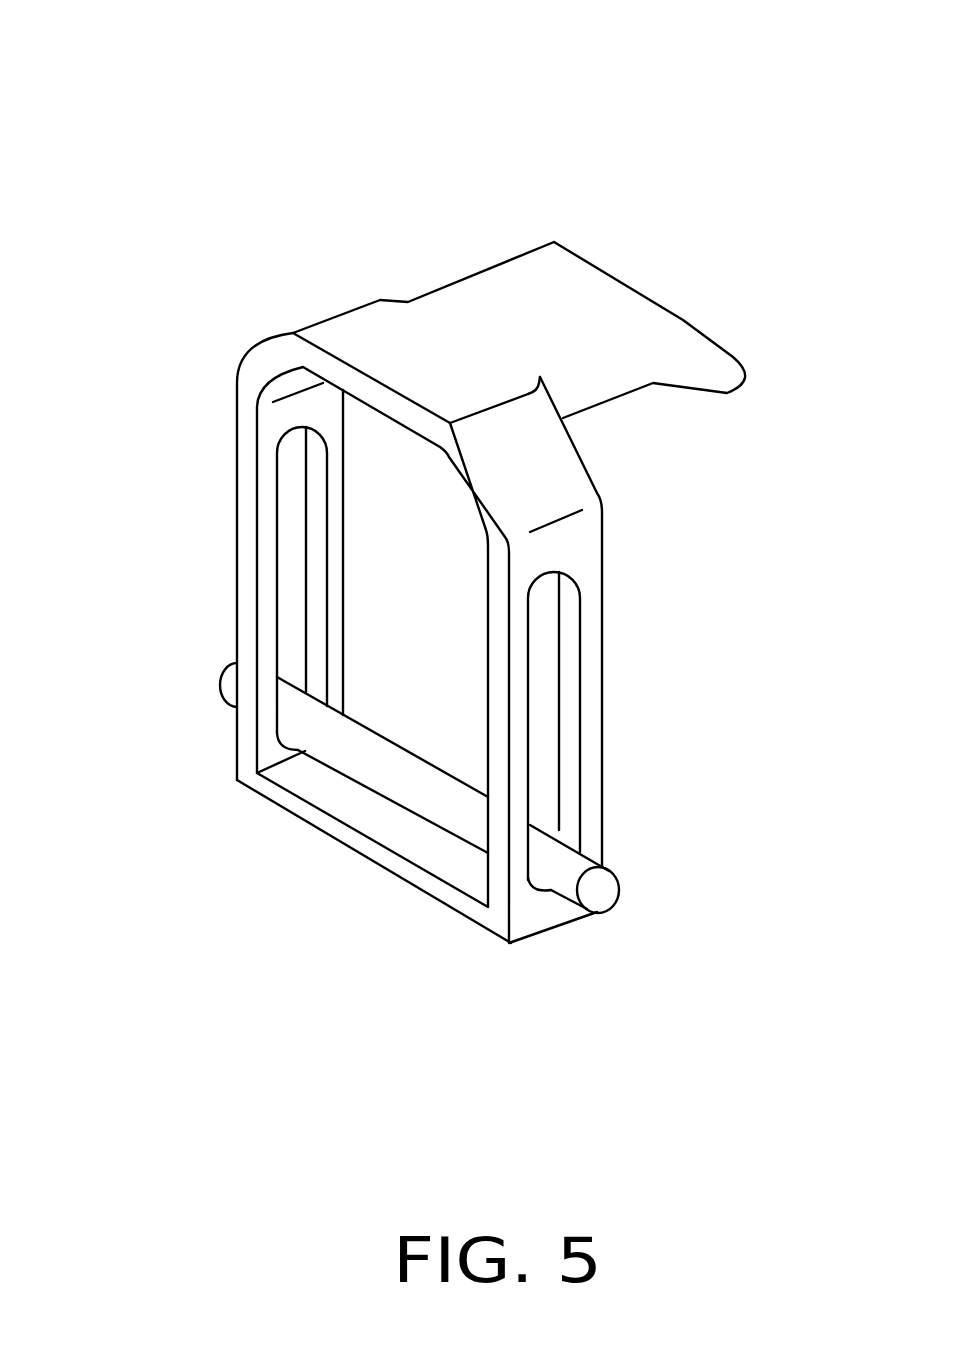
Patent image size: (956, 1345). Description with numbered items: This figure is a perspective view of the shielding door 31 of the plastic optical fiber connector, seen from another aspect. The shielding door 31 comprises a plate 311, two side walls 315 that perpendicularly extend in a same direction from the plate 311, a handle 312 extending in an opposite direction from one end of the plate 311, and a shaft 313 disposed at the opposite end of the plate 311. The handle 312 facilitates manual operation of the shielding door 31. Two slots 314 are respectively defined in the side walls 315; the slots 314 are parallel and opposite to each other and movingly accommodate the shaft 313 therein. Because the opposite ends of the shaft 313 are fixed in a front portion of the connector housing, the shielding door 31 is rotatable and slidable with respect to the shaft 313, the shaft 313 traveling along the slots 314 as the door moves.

The shielding door 31 is at (592, 47).
The plate 311 is at (413, 682).
The handle 312 is at (583, 300).
The shaft 313 is at (592, 884).
The slot 314 is at (292, 587).
The side wall 315 is at (263, 657).